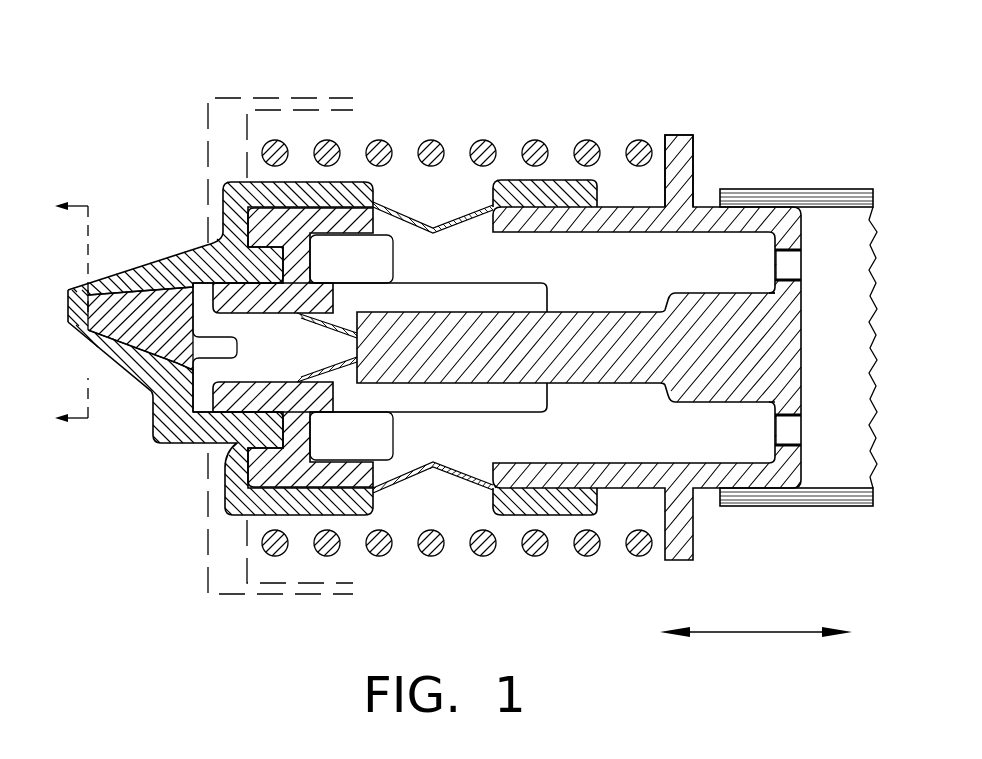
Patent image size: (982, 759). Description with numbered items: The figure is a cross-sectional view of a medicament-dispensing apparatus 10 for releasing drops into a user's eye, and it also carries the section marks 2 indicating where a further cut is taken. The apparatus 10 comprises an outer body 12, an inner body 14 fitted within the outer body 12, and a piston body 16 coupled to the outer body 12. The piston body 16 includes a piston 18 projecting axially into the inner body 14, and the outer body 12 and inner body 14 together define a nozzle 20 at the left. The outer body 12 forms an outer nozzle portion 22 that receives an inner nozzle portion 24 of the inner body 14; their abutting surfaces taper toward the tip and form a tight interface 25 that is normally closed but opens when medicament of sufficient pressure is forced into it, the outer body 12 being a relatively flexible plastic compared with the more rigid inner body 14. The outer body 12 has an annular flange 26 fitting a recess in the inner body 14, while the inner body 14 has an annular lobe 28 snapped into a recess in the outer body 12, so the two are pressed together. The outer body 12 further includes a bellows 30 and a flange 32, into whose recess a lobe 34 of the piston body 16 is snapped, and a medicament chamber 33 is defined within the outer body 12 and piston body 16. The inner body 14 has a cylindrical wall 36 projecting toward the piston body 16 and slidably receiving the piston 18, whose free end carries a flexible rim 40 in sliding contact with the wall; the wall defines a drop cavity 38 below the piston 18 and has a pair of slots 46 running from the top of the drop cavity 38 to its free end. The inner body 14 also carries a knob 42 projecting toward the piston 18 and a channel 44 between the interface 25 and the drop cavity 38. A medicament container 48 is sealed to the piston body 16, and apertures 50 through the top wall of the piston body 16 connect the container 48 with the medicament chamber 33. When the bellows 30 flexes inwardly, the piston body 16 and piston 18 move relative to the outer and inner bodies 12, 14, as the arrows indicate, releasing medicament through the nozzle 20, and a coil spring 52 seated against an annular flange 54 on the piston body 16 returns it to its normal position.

The apparatus 10 is at (525, 80).
The outer body 12 is at (185, 446).
The inner body 14 is at (298, 243).
The piston body 16 is at (610, 497).
The piston 18 is at (567, 312).
The nozzle 20 is at (57, 297).
The outer nozzle portion 22 is at (127, 268).
The inner nozzle portion 24 is at (133, 400).
The tight interface 25 is at (90, 342).
The annular flange 26 is at (222, 452).
The annular lobe 28 is at (340, 516).
The bellows 30 is at (456, 222).
The flange 32 is at (566, 182).
The medicament chamber 33 is at (474, 468).
The lobe 34 is at (552, 513).
The cylindrical wall 36 is at (549, 407).
The drop cavity 38 is at (326, 348).
The flexible rim 40 is at (348, 368).
The knob 42 is at (240, 350).
The channel 44 is at (198, 282).
The slots 46 is at (470, 282).
The medicament container 48 is at (790, 190).
The apertures 50 is at (803, 265).
The coil spring 52 is at (379, 139).
The annular flange 54 is at (693, 140).
The section line 2 is at (62, 313).